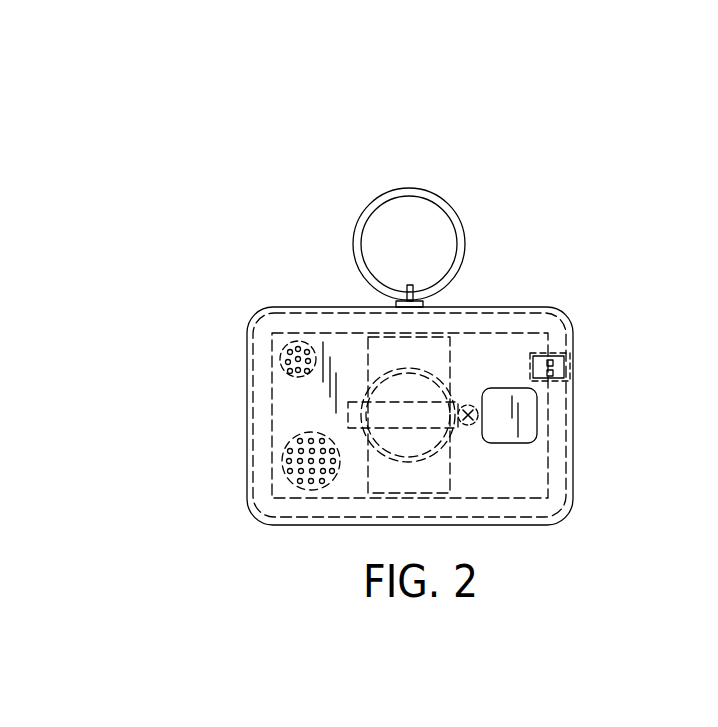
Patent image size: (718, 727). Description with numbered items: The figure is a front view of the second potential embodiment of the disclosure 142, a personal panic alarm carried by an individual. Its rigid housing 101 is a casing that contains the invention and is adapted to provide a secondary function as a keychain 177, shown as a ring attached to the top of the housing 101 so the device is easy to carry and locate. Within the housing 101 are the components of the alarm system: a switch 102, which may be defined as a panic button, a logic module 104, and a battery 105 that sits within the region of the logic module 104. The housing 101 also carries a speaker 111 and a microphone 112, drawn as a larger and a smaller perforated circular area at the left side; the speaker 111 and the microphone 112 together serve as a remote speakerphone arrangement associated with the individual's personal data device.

The second potential embodiment of the disclosure 142 is at (250, 178).
The keychain 177 is at (418, 193).
The battery 105 is at (432, 375).
The housing 101 is at (573, 335).
The switch 102 is at (525, 415).
The logic module 104 is at (442, 475).
The microphone 112 is at (297, 362).
The speaker 111 is at (300, 457).